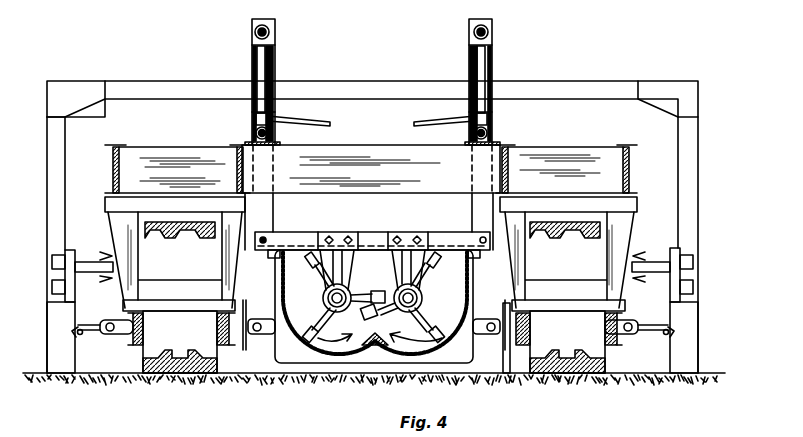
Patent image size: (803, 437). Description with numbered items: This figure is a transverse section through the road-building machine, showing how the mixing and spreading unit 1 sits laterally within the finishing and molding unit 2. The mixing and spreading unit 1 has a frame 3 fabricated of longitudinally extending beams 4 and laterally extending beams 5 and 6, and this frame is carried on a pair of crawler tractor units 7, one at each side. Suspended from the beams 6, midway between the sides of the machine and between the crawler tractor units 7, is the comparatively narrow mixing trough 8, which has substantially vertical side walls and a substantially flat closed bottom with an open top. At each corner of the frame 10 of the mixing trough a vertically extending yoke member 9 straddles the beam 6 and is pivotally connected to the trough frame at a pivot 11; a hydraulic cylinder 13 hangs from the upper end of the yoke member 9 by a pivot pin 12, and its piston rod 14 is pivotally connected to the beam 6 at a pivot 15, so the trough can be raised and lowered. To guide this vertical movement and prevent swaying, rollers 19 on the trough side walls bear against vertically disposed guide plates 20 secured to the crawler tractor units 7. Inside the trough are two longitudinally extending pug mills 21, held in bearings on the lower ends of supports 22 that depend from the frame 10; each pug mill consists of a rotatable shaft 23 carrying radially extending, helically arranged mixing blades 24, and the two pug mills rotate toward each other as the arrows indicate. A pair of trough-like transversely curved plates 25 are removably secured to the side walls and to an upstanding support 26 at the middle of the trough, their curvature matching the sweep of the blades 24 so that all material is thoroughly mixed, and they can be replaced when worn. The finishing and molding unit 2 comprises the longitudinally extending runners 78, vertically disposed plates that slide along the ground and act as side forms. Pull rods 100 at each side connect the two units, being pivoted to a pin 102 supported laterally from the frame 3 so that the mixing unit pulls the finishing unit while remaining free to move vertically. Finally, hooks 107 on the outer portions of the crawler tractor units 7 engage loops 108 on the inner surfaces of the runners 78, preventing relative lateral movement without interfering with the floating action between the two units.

The mixing and spreading unit 1 is at (47, 93).
The finishing and molding unit 2 is at (47, 355).
The frame 3 is at (630, 165).
The longitudinally extending beams 4 is at (110, 147).
The laterally extending beams 5 is at (578, 155).
The laterally extending beams 6 is at (372, 153).
The crawler tractor units 7 is at (165, 352).
The mixing trough 8 is at (275, 360).
The yoke member 9 is at (268, 77).
The frame of the mixing trough 10 is at (369, 221).
The pivotal connection 11 is at (268, 240).
The pivot pin 12 is at (275, 27).
The hydraulic cylinder 13 is at (257, 60).
The piston rod 14 is at (258, 118).
The pivotal connection 15 is at (255, 133).
The rollers 19 is at (494, 336).
The guide plates 20 is at (506, 350).
The pug mills 21 is at (337, 275).
The supports 22 is at (400, 275).
The rotatable shaft 23 is at (424, 303).
The mixing blades 24 is at (312, 322).
The transversely curved plates 25 is at (300, 342).
The upstanding support 26 is at (373, 350).
The runners 78 is at (60, 327).
The pull rods 100 is at (60, 292).
The pin 102 is at (52, 262).
The hooks 107 is at (98, 322).
The loops 108 is at (80, 336).